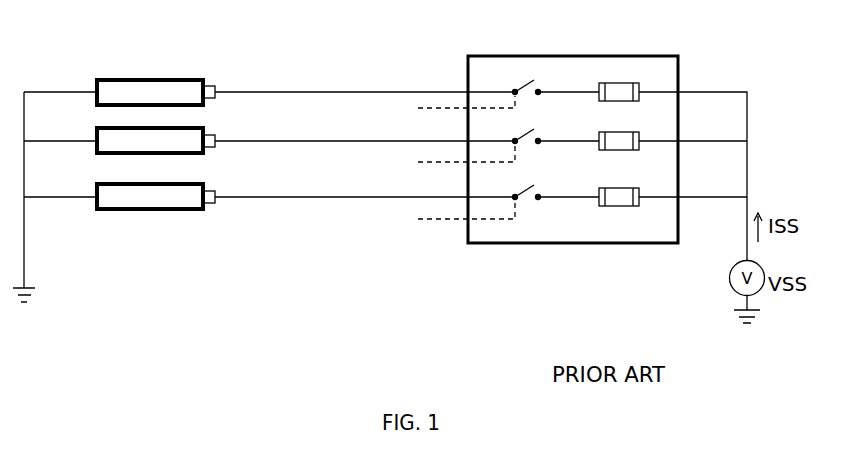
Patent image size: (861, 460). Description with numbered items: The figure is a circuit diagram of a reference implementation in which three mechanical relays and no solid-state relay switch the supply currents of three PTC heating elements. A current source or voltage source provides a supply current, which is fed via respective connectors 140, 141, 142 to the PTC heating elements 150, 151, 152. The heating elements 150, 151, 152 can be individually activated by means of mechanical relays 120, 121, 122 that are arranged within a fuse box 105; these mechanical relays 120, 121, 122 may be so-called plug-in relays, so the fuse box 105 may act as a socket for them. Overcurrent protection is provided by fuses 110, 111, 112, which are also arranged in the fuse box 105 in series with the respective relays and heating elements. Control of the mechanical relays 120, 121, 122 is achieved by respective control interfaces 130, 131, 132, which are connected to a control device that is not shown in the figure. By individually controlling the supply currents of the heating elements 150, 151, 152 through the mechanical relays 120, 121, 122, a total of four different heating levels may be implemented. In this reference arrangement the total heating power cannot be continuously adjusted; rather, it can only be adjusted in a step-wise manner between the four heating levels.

The fuse box 105 is at (490, 56).
The fuse 110 is at (599, 84).
The fuse 111 is at (599, 133).
The fuse 112 is at (599, 189).
The mechanical relay 120 is at (527, 85).
The mechanical relay 121 is at (527, 134).
The mechanical relay 122 is at (527, 190).
The control interface 130 is at (418, 108).
The control interface 131 is at (418, 162).
The control interface 132 is at (418, 219).
The connector 140 is at (213, 86).
The connector 141 is at (213, 135).
The connector 142 is at (213, 191).
The PTC heating element 150 is at (97, 82).
The PTC heating element 151 is at (97, 130).
The PTC heating element 152 is at (97, 187).